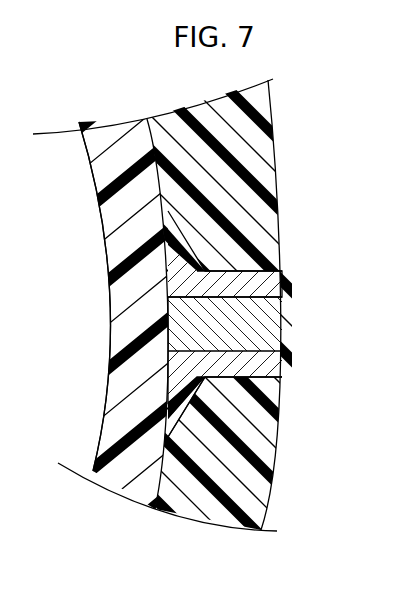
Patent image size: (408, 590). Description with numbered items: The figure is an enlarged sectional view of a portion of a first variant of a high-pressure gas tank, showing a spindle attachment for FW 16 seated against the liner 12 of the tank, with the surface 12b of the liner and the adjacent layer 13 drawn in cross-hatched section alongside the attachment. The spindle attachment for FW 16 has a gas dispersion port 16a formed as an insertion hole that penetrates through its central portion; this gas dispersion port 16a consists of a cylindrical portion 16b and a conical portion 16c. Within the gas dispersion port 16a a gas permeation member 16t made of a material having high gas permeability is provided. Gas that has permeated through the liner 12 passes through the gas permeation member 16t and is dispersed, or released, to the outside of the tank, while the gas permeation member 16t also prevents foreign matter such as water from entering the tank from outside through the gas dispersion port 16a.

The liner 12 is at (100, 237).
The surface of first layer 12b is at (110, 320).
The second layer 13 is at (260, 178).
The spindle attachment for FW 16 is at (261, 367).
The gas permeation member 16t is at (280, 313).
The gas dispersion port 16a is at (280, 340).
The cylindrical portion 16b is at (273, 368).
The conical portion 16c is at (173, 400).